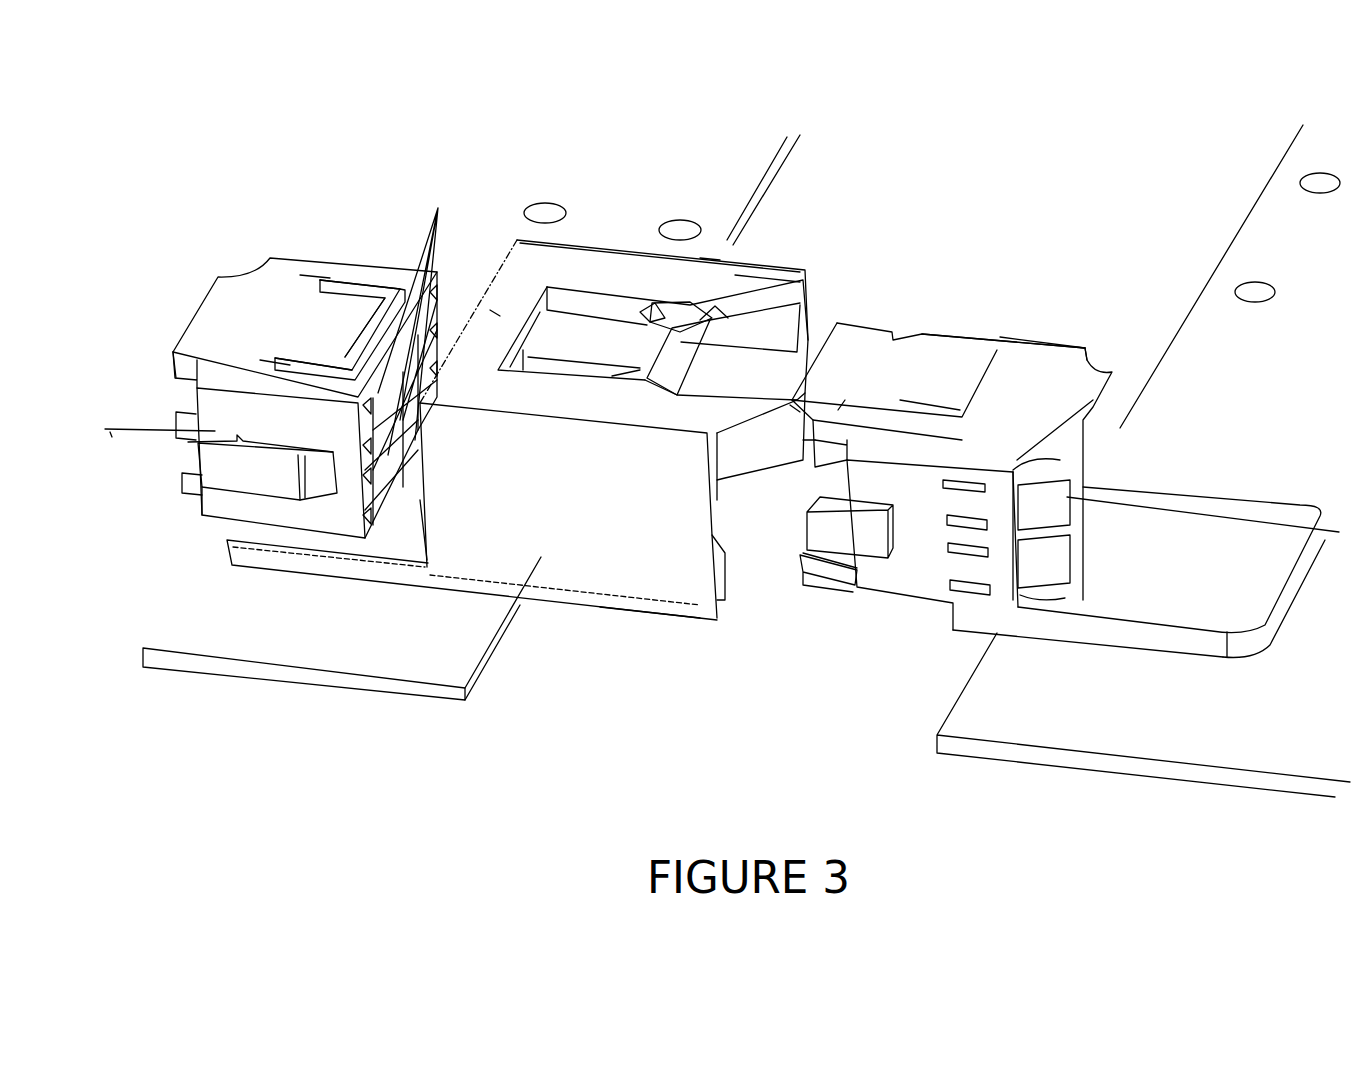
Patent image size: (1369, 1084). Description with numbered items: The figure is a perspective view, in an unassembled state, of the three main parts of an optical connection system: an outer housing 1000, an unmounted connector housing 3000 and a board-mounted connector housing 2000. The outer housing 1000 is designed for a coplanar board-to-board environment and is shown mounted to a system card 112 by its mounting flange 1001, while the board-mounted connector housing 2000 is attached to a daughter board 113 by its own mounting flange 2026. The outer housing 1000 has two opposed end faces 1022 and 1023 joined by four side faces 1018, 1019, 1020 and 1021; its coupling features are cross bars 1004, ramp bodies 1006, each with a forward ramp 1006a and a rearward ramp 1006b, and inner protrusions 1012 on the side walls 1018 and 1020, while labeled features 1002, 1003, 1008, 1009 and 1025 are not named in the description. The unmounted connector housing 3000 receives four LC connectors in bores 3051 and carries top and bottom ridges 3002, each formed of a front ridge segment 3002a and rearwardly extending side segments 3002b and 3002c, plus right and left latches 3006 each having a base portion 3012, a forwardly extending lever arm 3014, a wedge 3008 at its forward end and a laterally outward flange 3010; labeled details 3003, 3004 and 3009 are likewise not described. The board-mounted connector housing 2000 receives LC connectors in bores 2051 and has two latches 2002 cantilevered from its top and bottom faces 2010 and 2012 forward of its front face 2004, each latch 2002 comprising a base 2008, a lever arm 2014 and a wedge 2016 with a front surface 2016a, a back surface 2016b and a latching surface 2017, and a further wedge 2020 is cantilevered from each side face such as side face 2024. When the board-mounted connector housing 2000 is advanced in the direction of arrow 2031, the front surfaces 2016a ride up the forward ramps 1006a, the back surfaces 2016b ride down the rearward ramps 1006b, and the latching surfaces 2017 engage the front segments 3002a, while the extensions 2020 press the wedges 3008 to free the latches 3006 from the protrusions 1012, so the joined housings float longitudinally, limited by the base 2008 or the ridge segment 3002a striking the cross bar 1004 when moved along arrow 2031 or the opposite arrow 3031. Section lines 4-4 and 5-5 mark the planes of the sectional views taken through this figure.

The system card 112 is at (340, 685).
The daughter board 113 is at (1028, 757).
The outer housing 1000 is at (586, 540).
The mounting flange 1001 is at (282, 560).
The housing side portion 1002 is at (735, 475).
The housing top surface 1003 is at (607, 257).
The cross bar 1004 is at (677, 352).
The ramp body 1006 is at (635, 450).
The forward ramp 1006a is at (653, 390).
The rearward ramp 1006b is at (650, 314).
The recess 1008 is at (543, 303).
The housing top face edge 1009 is at (495, 313).
The inner protrusion 1012 is at (650, 352).
The side face 1018 is at (702, 252).
The side face 1019 is at (737, 273).
The side face 1020 is at (548, 583).
The side face 1021 is at (642, 613).
The end face 1022 is at (425, 537).
The end face 1023 is at (720, 600).
The sloped wall 1025 is at (555, 347).
The board-mounted connector housing 2000 is at (1018, 348).
The latch 2002 is at (882, 343).
The front face 2004 is at (852, 442).
The base 2008 is at (943, 420).
The top face 2010 is at (950, 333).
The bottom face 2012 is at (918, 600).
The lever arm 2014 is at (885, 408).
The wedge 2016 is at (812, 407).
The front surface 2016a is at (788, 410).
The back surface 2016b is at (838, 408).
The latching surface 2017 is at (837, 557).
The wedge 2020 is at (848, 527).
The side face 2024 is at (1067, 333).
The mounting flange 2026 is at (1125, 632).
The arrow 2031 is at (1050, 423).
The bore 2051 is at (1053, 560).
The unmounted connector housing 3000 is at (282, 265).
The ridge 3002 is at (373, 323).
The front ridge segment 3002a is at (358, 342).
The side segment 3002b is at (346, 283).
The side segment 3002c is at (303, 367).
The cage top surface 3003 is at (320, 283).
The cage top notch 3004 is at (275, 363).
The latch 3006 is at (237, 475).
The wedge 3008 is at (308, 483).
The insert edge 3009 is at (300, 475).
The flange 3010 is at (195, 463).
The base portion 3012 is at (210, 432).
The lever arm 3014 is at (260, 462).
The arrow 3031 is at (176, 297).
The bore 3051 is at (418, 318).
The section line 4 is at (118, 425).
The section line 5 is at (112, 437).